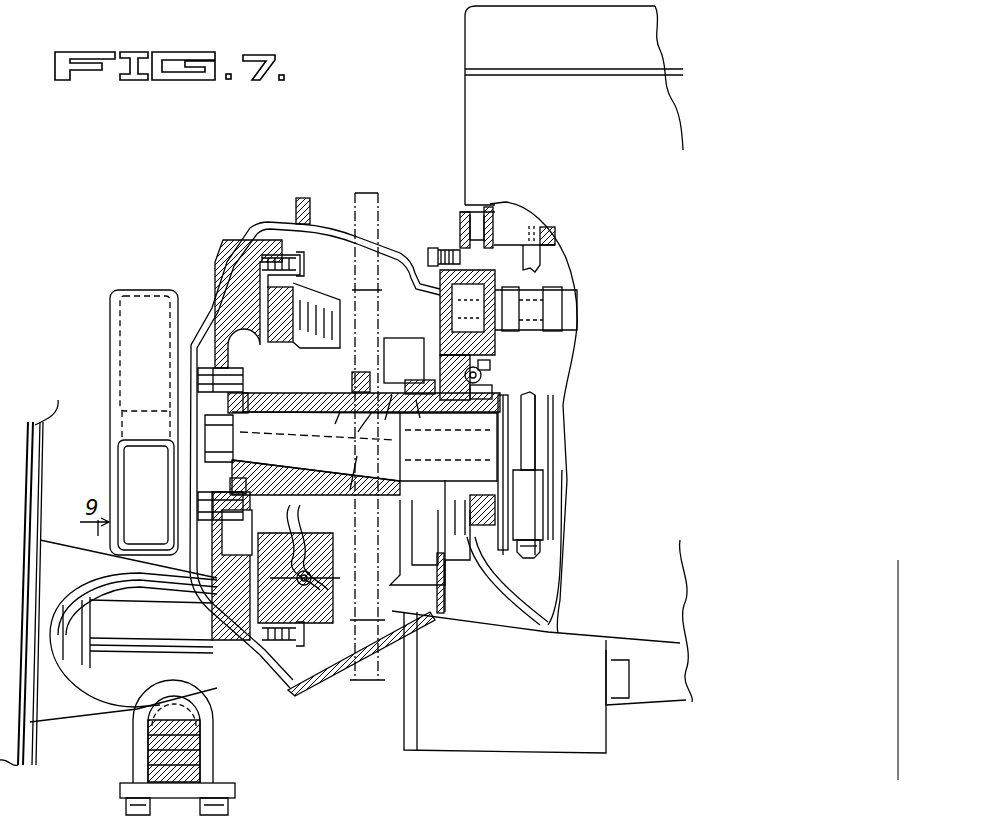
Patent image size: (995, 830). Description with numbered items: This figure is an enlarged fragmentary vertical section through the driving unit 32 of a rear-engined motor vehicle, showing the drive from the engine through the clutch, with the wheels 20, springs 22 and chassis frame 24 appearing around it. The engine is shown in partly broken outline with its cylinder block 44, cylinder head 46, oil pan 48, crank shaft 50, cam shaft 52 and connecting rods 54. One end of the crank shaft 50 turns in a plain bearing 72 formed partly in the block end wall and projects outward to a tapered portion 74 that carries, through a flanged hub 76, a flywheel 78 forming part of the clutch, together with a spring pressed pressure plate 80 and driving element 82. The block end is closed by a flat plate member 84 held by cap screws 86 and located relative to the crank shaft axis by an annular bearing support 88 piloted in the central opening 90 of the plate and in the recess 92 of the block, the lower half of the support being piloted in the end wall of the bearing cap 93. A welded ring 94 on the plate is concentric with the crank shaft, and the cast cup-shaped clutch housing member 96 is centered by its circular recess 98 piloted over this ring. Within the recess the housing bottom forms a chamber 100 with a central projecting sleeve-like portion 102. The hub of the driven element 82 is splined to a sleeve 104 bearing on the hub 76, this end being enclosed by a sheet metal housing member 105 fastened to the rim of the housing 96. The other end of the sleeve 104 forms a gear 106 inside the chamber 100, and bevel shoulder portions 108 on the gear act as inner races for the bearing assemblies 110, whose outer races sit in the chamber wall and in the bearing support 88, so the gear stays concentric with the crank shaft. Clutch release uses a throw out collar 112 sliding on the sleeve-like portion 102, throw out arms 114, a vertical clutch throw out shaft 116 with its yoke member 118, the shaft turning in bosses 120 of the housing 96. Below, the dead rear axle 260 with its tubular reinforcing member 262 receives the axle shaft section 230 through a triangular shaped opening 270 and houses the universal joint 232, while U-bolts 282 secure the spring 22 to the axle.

The wheels 20 is at (29, 575).
The springs 22 is at (147, 770).
The vehicle chassis frame 24 is at (110, 301).
The driving unit 32 is at (455, 67).
The cylinder block 44 is at (574, 105).
The cylinder head 46 is at (574, 50).
The oil pan 48 is at (524, 622).
The crank shaft 50 is at (585, 454).
The cam shaft 52 is at (575, 310).
The connecting rods 54 is at (542, 268).
The plain bearing 72 is at (520, 404).
The tapered portion 74 is at (366, 444).
The flanged hub 76 is at (219, 438).
The flywheel 78 is at (228, 272).
The pressure plate 80 is at (293, 300).
The driving element 82 is at (220, 312).
The plate member 84 is at (460, 244).
The cap screws 86 is at (432, 260).
The annular bearing support 88 is at (497, 365).
The central opening 90 is at (450, 556).
The recess 92 is at (480, 368).
The bearing cap 93 is at (496, 521).
The ring 94 is at (440, 348).
The clutch housing member 96 is at (316, 221).
The circular recess 98 is at (440, 310).
The chamber 100 is at (384, 370).
The sleeve-like portion 102 is at (349, 430).
The sleeve 104 is at (321, 423).
The sheet metal housing member 105 is at (253, 240).
The gear 106 is at (432, 409).
The bevel shoulder portions 108 is at (375, 414).
The bearing assembly 110 is at (492, 378).
The clutch throw out collar 112 is at (346, 468).
The clutch throw out arms 114 is at (305, 547).
The clutch throw out shaft 116 is at (380, 210).
The yoke member 118 is at (370, 553).
The bosses 120 is at (350, 264).
The axle shaft section 230 is at (193, 628).
The universal joint 232 is at (67, 664).
The rear axle 260 is at (60, 708).
The tubular reinforcing member 262 is at (160, 590).
The triangular shaped opening 270 is at (121, 594).
The U-bolts 282 is at (214, 761).